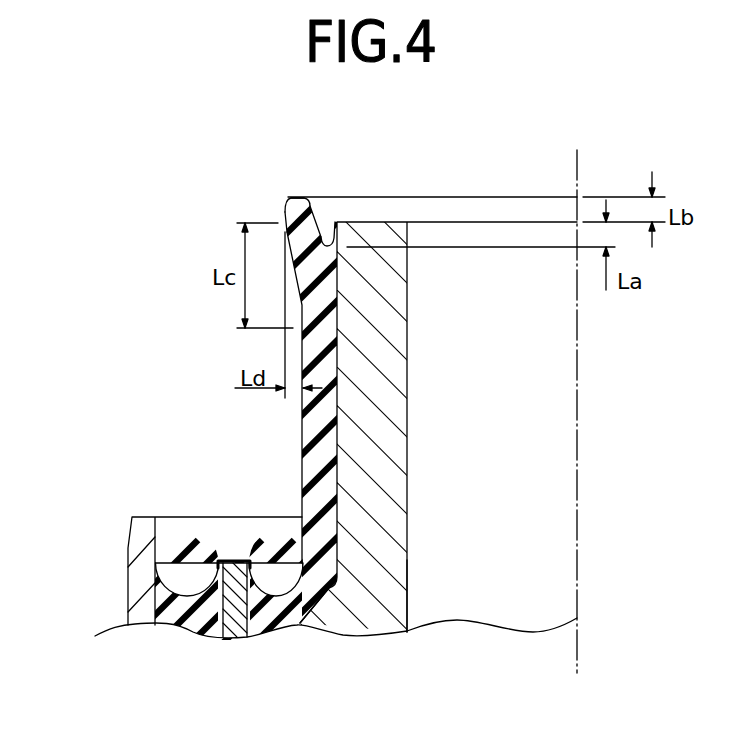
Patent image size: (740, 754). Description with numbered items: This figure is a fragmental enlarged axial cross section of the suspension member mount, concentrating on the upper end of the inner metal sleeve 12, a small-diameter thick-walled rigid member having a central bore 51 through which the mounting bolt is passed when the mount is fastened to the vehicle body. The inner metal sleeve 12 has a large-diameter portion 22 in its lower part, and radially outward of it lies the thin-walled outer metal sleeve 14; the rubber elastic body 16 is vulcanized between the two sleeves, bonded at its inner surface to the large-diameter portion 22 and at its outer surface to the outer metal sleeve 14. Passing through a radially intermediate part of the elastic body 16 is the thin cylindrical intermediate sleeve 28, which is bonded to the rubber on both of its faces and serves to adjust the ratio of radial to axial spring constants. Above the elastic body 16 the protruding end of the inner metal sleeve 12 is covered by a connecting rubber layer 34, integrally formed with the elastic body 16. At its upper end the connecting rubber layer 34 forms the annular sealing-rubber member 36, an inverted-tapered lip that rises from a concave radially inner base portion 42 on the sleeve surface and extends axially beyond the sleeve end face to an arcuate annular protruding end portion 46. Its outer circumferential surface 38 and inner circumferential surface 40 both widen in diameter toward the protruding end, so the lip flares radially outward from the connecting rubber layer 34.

The inner metal sleeve 12 is at (390, 455).
The outer metal sleeve 14 is at (137, 575).
The elastic body 16 is at (192, 592).
The large-diameter portion 22 is at (357, 618).
The intermediate sleeve 28 is at (235, 623).
The connecting rubber layer 34 is at (312, 423).
The annular sealing-rubber member 36 is at (288, 187).
The outer circumferential surface 38 is at (286, 218).
The inner circumferential surface 40 is at (322, 205).
The radially inner base portion 42 is at (328, 237).
The annular protruding end portion 46 is at (298, 208).
The bore 51 is at (409, 575).